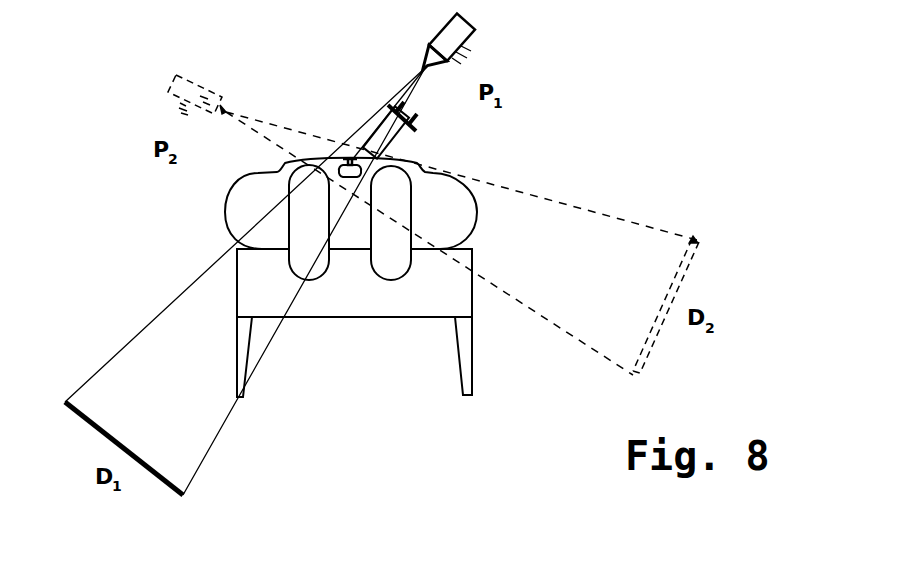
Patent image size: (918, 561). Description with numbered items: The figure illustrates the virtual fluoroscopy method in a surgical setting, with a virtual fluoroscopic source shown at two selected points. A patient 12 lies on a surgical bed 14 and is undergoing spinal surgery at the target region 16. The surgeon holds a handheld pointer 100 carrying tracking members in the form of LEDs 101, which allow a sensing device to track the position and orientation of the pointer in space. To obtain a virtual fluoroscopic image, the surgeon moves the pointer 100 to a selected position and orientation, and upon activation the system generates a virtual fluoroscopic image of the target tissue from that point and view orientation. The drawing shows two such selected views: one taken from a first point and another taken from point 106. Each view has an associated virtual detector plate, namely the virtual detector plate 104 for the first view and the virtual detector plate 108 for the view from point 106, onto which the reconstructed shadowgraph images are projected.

The patient 12 is at (483, 188).
The surgical bed 14 is at (388, 313).
The target region 16 is at (350, 158).
The handheld pointer 100 is at (425, 67).
The LEDs 101 is at (464, 50).
The virtual detector plate 104 is at (97, 434).
The point P2 106 is at (232, 104).
The virtual detector plate 108 is at (690, 270).